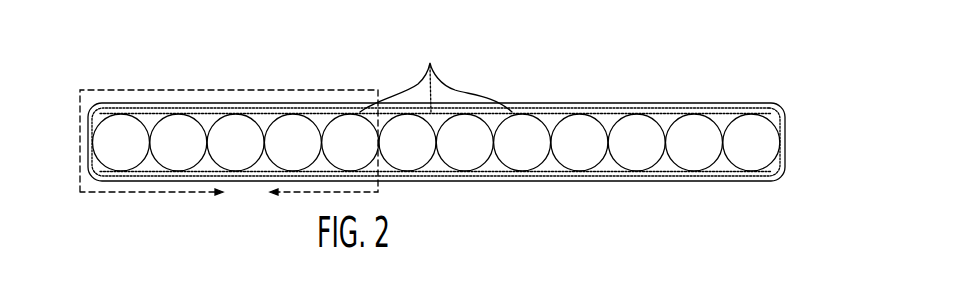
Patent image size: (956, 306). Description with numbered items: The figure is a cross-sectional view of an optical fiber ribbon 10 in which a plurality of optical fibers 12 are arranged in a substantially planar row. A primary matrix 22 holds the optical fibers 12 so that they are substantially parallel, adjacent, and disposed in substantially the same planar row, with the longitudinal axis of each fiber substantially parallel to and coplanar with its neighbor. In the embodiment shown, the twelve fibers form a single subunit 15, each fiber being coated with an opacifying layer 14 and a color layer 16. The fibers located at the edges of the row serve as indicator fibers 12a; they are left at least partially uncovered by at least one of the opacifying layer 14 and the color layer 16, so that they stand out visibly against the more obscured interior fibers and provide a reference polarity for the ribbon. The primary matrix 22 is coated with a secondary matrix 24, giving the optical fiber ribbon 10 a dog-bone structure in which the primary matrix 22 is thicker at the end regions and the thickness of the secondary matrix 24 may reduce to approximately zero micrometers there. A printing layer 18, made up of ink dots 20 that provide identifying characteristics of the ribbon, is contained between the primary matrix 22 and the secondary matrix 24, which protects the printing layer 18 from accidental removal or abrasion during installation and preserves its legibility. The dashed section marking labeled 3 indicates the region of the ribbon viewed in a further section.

The optical fiber ribbon 10 is at (137, 70).
The optical fibers 12 is at (747, 163).
The indicator fibers 12a is at (117, 162).
The opacifying layer 14 is at (198, 115).
The subunit 15 is at (774, 172).
The color layer 16 is at (535, 174).
The printing layer 18 is at (545, 94).
The ink dots 20 is at (436, 74).
The primary matrix 22 is at (673, 113).
The secondary matrix 24 is at (745, 110).
The section line 3 is at (246, 198).